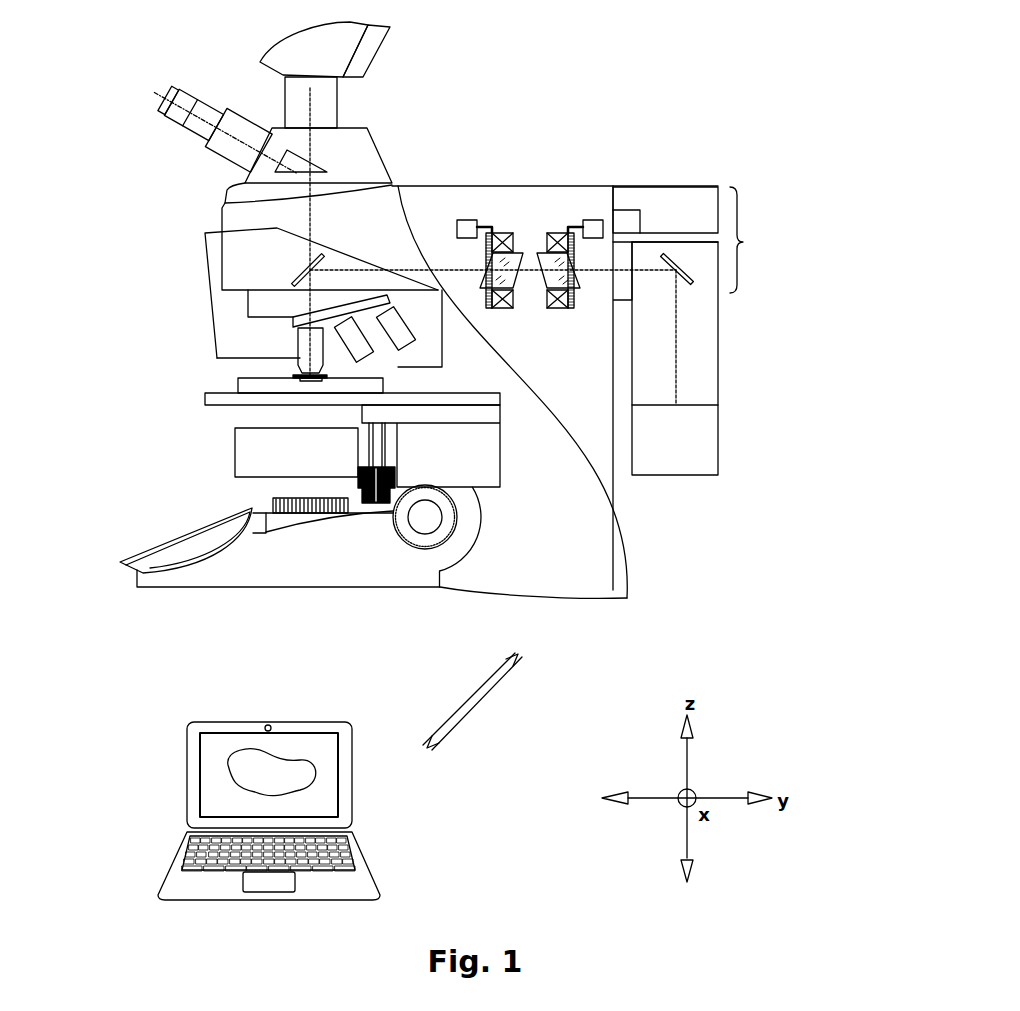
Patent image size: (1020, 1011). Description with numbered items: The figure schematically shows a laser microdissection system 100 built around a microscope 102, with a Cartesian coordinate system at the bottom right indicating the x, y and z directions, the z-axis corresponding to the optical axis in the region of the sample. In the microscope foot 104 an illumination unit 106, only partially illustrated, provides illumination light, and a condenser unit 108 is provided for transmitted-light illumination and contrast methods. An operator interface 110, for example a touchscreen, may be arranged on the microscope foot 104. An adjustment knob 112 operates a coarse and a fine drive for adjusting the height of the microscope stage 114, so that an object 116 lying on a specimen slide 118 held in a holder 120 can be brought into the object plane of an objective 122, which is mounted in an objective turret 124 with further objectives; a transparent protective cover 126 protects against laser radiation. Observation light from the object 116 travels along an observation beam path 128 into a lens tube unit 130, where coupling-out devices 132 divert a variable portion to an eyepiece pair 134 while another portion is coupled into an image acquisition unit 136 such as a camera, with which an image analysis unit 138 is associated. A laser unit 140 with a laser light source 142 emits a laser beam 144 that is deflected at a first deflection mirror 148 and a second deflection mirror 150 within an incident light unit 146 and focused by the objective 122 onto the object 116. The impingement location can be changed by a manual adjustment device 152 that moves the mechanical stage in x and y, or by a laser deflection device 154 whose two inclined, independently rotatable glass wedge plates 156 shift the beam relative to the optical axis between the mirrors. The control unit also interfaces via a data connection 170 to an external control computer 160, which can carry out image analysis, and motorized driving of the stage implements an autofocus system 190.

The laser microdissection system 100 is at (503, 348).
The microscope 102 is at (650, 572).
The microscope foot 104 is at (373, 569).
The illumination unit 106 is at (270, 494).
The condenser unit 108 is at (243, 440).
The operator interface 110 is at (153, 542).
The adjustment knob 112 is at (442, 533).
The microscope stage 114 is at (207, 392).
The examination object 116 is at (308, 381).
The specimen slide 118 is at (291, 381).
The holder 120 is at (232, 376).
The objective 122 is at (302, 342).
The objective turret 124 is at (387, 293).
The protective cover 126 is at (210, 252).
The observation beam path 128 is at (313, 233).
The lens tube unit 130 is at (364, 134).
The coupling-out device 132 is at (318, 168).
The eyepiece pair 134 is at (195, 92).
The image acquisition unit 136 is at (368, 54).
The image analysis unit 138 is at (666, 193).
The laser unit 140 is at (707, 379).
The laser light source 142 is at (677, 468).
The laser beam 144 is at (676, 322).
The incident light unit 146 is at (754, 240).
The first deflection mirror 148 is at (683, 258).
The second deflection mirror 150 is at (293, 267).
The adjustment device 152 is at (383, 449).
The laser deflection device 154 is at (523, 205).
The wedge plates 156 is at (519, 254).
The control computer 160 is at (366, 779).
The data connection 170 is at (485, 697).
The autofocus system 190 is at (620, 217).